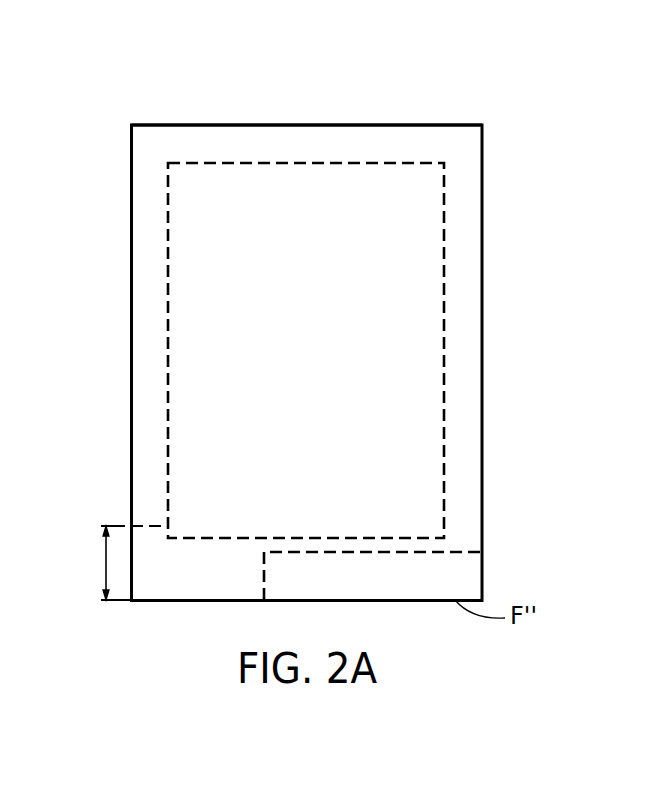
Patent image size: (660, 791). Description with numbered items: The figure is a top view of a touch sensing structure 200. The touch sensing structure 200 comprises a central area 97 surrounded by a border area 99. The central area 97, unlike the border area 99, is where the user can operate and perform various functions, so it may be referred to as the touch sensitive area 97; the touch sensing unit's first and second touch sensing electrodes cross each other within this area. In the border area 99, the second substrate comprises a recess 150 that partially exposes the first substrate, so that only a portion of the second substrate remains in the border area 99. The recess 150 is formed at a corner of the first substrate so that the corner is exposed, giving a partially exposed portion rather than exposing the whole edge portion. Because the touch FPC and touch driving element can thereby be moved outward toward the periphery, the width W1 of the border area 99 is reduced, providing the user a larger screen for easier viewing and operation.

The touch sensing structure 200 is at (456, 72).
The border area 99 is at (255, 134).
The central area 97 is at (357, 171).
The recess 150 is at (483, 584).
The width of the border area W1 is at (116, 563).